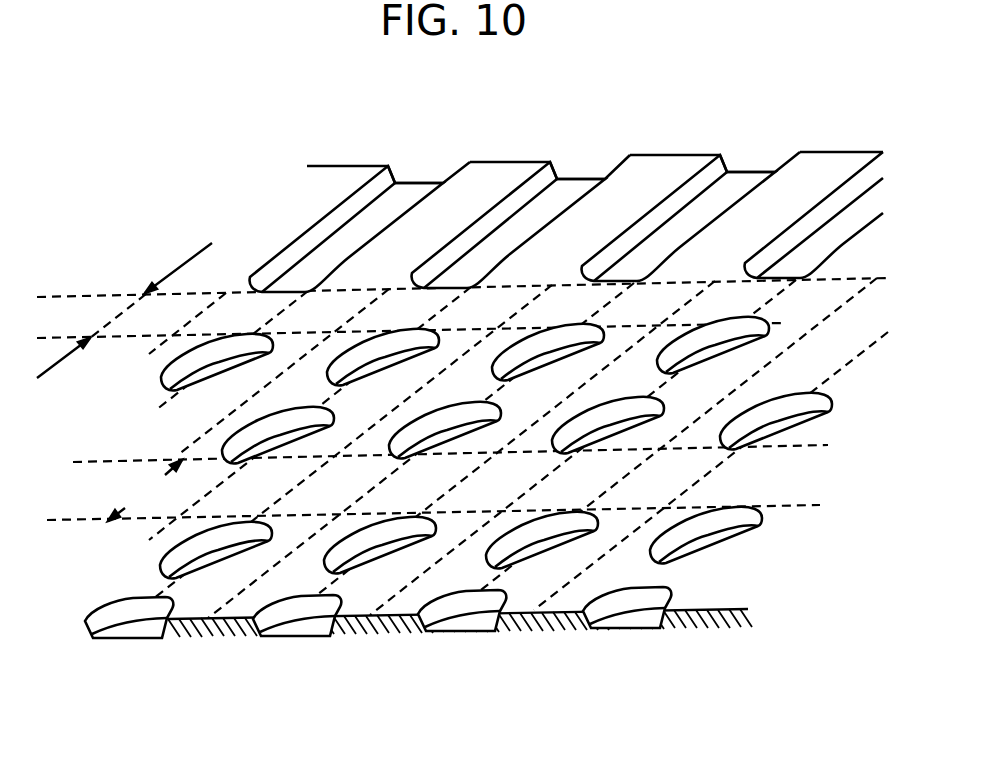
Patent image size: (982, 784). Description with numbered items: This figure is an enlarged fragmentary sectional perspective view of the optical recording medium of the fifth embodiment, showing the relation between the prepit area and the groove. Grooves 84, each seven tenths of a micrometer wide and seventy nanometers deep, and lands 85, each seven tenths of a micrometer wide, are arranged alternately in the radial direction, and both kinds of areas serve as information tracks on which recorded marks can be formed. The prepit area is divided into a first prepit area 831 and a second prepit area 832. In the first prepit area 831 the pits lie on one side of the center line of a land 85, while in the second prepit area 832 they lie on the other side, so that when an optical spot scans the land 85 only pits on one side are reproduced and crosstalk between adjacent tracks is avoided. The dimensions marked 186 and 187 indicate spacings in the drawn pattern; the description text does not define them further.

The groove 84 is at (418, 183).
The land 85 is at (513, 162).
The first prepit area 831 is at (237, 433).
The second prepit area 832 is at (385, 520).
The pitch in first direction 186 is at (124, 310).
The pitch in second direction 187 is at (145, 490).